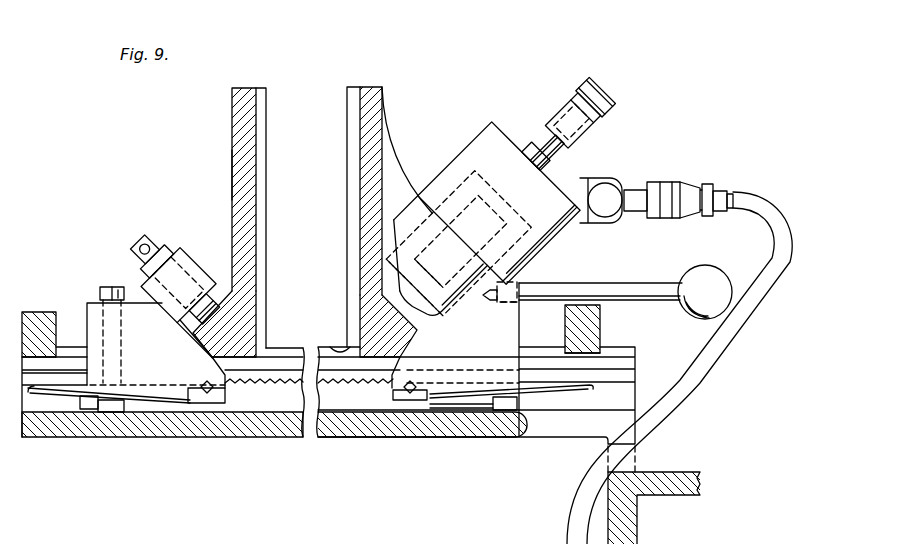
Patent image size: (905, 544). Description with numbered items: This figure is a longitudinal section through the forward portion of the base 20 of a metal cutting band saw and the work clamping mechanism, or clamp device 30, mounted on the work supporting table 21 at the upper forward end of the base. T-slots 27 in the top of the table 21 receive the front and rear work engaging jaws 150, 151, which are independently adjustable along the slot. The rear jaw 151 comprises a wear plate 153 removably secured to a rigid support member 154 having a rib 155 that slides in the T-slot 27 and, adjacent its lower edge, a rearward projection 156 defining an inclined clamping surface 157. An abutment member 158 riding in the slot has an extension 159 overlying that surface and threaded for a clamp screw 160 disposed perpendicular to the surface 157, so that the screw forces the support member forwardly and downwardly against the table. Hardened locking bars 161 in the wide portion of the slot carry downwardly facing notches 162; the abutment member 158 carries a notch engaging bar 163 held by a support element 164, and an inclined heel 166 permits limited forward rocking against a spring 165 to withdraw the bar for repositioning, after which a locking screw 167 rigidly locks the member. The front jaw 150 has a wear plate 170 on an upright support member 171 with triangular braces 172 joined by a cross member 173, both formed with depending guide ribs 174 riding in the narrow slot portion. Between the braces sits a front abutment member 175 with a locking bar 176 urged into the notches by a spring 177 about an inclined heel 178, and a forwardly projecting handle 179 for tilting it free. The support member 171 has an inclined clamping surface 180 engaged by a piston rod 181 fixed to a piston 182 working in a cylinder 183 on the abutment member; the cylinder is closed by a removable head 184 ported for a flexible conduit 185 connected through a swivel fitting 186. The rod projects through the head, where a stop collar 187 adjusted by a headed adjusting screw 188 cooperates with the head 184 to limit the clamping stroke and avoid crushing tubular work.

The base 20 is at (641, 533).
The work supporting table 21 is at (66, 344).
The T-slots 27 is at (630, 405).
The clamp device 30 is at (394, 107).
The front work engaging jaw 150 is at (372, 86).
The rear work engaging jaw 151 is at (248, 86).
The wear plate 153 is at (271, 150).
The support member 154 is at (231, 156).
The rib 155 is at (268, 347).
The rearward enlargement or projection 156 is at (199, 342).
The inclined clamping surface 157 is at (240, 290).
The abutment member 158 is at (87, 303).
The extension 159 is at (181, 252).
The clamp screw 160 is at (148, 238).
The locking bars 161 is at (402, 375).
The notches 162 is at (360, 414).
The notch engaging bar 163 is at (205, 405).
The support element 164 is at (205, 402).
The spring 165 is at (62, 393).
The inclined heel 166 is at (108, 412).
The locking screw 167 is at (110, 287).
The wear plate 170 is at (349, 160).
The upright support member 171 is at (388, 141).
The triangular braces 172 is at (398, 187).
The cross member 173 is at (602, 350).
The depending guide ribs 174 is at (330, 349).
The front abutment member 175 is at (518, 350).
The locking bar 176 is at (404, 430).
The spring 177 is at (538, 408).
The inclined heel 178 is at (515, 425).
The handle 179 is at (640, 288).
The inclined clamping surface 180 is at (440, 312).
The piston rod 181 is at (400, 285).
The piston 182 is at (462, 165).
The cylinder 183 is at (565, 242).
The removable head 184 is at (514, 128).
The flexible conduit 185 is at (735, 328).
The swivel fitting 186 is at (599, 182).
The stop collar 187 is at (583, 88).
The headed adjusting screw 188 is at (613, 109).